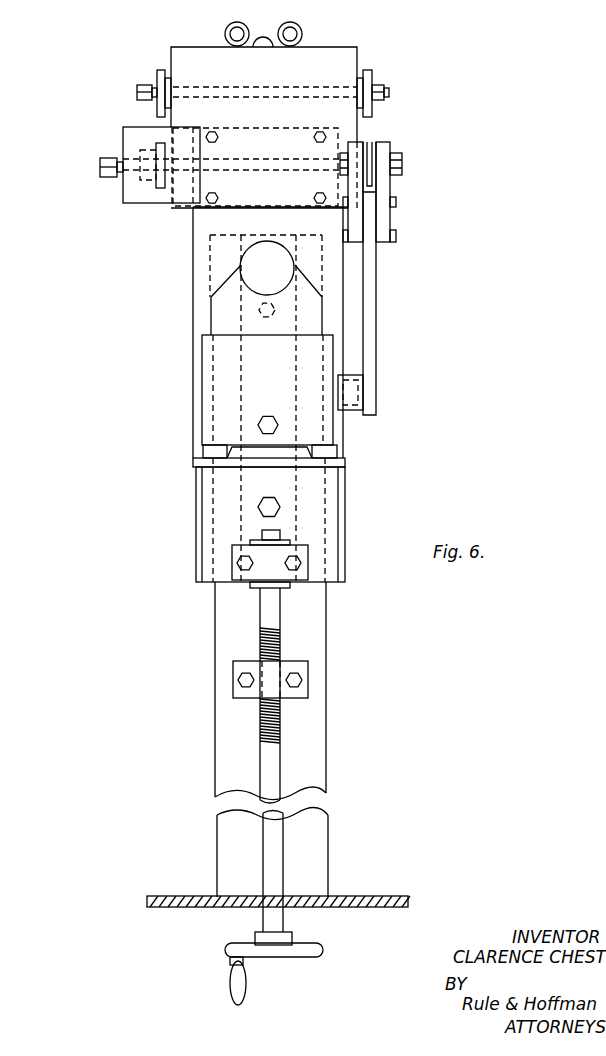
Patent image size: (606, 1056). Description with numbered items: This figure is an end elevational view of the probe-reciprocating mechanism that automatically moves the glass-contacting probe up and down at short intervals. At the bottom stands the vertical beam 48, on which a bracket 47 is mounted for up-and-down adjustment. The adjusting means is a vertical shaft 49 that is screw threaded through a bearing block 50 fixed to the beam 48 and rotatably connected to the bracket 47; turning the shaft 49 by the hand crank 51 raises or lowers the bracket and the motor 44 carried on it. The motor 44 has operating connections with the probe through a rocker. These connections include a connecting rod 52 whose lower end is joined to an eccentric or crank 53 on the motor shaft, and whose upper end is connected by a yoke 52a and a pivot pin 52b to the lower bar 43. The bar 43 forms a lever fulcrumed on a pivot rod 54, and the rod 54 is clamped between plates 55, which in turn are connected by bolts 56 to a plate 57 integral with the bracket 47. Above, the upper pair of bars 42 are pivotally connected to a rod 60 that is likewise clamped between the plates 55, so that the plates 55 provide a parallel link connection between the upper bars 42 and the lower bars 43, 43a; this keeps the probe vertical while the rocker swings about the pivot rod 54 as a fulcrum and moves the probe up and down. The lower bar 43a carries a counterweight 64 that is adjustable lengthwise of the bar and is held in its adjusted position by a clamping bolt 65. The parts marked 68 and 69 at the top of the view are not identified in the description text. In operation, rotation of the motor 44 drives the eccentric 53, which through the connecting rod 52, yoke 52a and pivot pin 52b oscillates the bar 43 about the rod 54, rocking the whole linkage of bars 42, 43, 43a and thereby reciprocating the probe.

The upper pair of bars 42 is at (158, 76).
The lower bar 43 is at (358, 142).
The lower bar 43a is at (160, 146).
The motor 44 is at (225, 402).
The bracket 47 is at (341, 512).
The vertical beam 48 is at (226, 732).
The vertical shaft 49 is at (272, 768).
The bearing block 50 is at (250, 662).
The hand crank 51 is at (236, 983).
The connecting rod 52 is at (372, 282).
The yoke 52a is at (383, 192).
The pivot pin 52b is at (393, 166).
The eccentric or crank 53 is at (355, 410).
The pivot rod 54 is at (280, 150).
The plates 55 is at (345, 62).
The bolts 56 is at (218, 198).
The plate 57 is at (203, 258).
The rod 60 is at (278, 92).
The counterweight 64 is at (134, 190).
The clamping bolt 65 is at (100, 163).
The roller 68 is at (296, 27).
The roller 69 is at (233, 27).